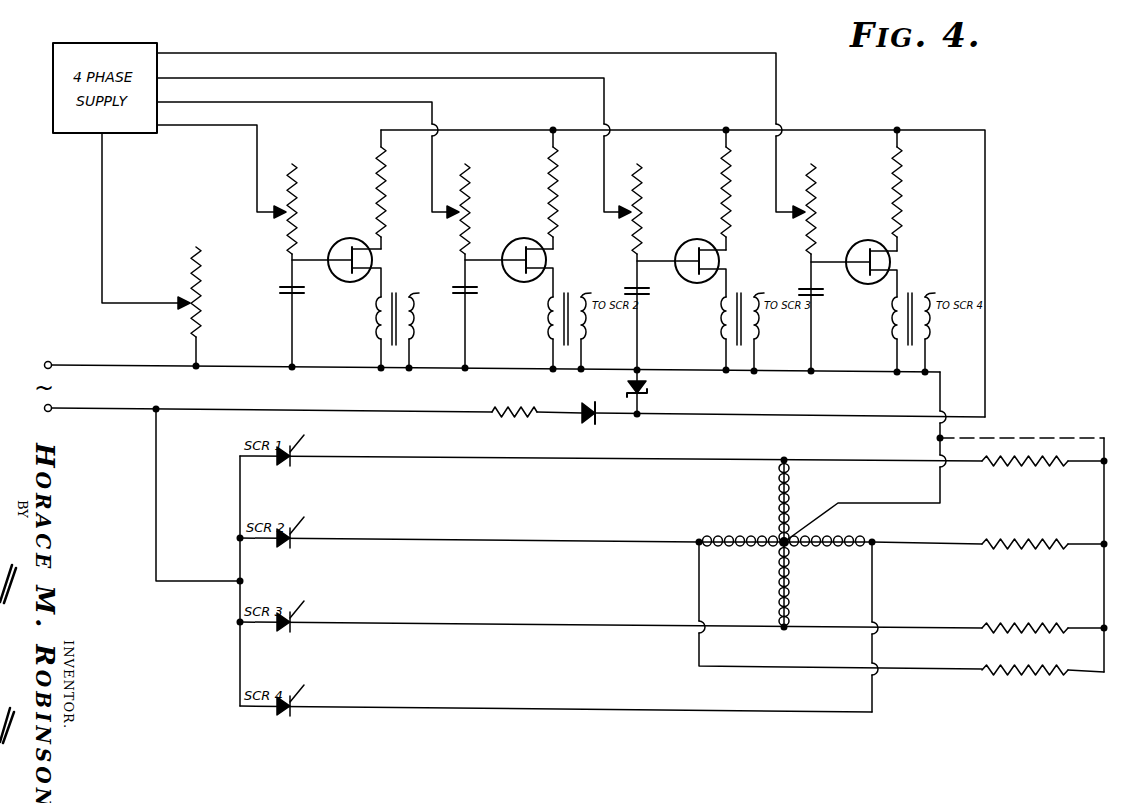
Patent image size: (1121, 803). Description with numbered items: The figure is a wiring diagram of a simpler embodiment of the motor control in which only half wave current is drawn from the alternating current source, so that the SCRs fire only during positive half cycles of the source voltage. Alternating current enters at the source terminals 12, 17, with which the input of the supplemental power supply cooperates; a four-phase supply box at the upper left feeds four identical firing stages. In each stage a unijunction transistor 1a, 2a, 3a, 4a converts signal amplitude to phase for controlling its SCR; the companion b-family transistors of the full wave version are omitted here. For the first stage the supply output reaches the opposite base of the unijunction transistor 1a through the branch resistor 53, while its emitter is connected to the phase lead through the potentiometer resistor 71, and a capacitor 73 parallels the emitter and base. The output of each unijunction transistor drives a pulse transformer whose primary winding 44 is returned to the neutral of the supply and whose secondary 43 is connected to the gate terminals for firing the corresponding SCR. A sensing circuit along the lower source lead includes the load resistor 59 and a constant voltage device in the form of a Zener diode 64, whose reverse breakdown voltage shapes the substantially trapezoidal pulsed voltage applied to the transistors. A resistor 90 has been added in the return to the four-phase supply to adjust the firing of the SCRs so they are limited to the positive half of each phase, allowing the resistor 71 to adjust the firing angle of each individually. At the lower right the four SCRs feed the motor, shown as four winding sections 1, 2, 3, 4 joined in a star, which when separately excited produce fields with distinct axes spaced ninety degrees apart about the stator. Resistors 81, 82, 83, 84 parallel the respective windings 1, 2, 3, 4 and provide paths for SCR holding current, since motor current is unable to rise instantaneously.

The source terminal 12 is at (45, 363).
The source terminal 17 is at (45, 410).
The resistor 90 is at (200, 283).
The potentiometer resistor 71 is at (296, 207).
The capacitor 73 is at (281, 294).
The branch resistor 53 is at (387, 186).
The unijunction transistor 1a is at (362, 239).
The unijunction transistor 2a is at (536, 239).
The unijunction transistor 3a is at (709, 240).
The unijunction transistor 4a is at (880, 241).
The primary winding 44 is at (377, 330).
The secondary 43 is at (412, 333).
The load resistor 59 is at (512, 409).
The Zener diode 64 is at (649, 392).
The winding section 1 is at (778, 495).
The winding section 2 is at (729, 549).
The winding section 3 is at (789, 594).
The winding section 4 is at (836, 540).
The resistor 81 is at (1025, 466).
The resistor 82 is at (1018, 551).
The resistor 83 is at (1018, 634).
The resistor 84 is at (1009, 677).